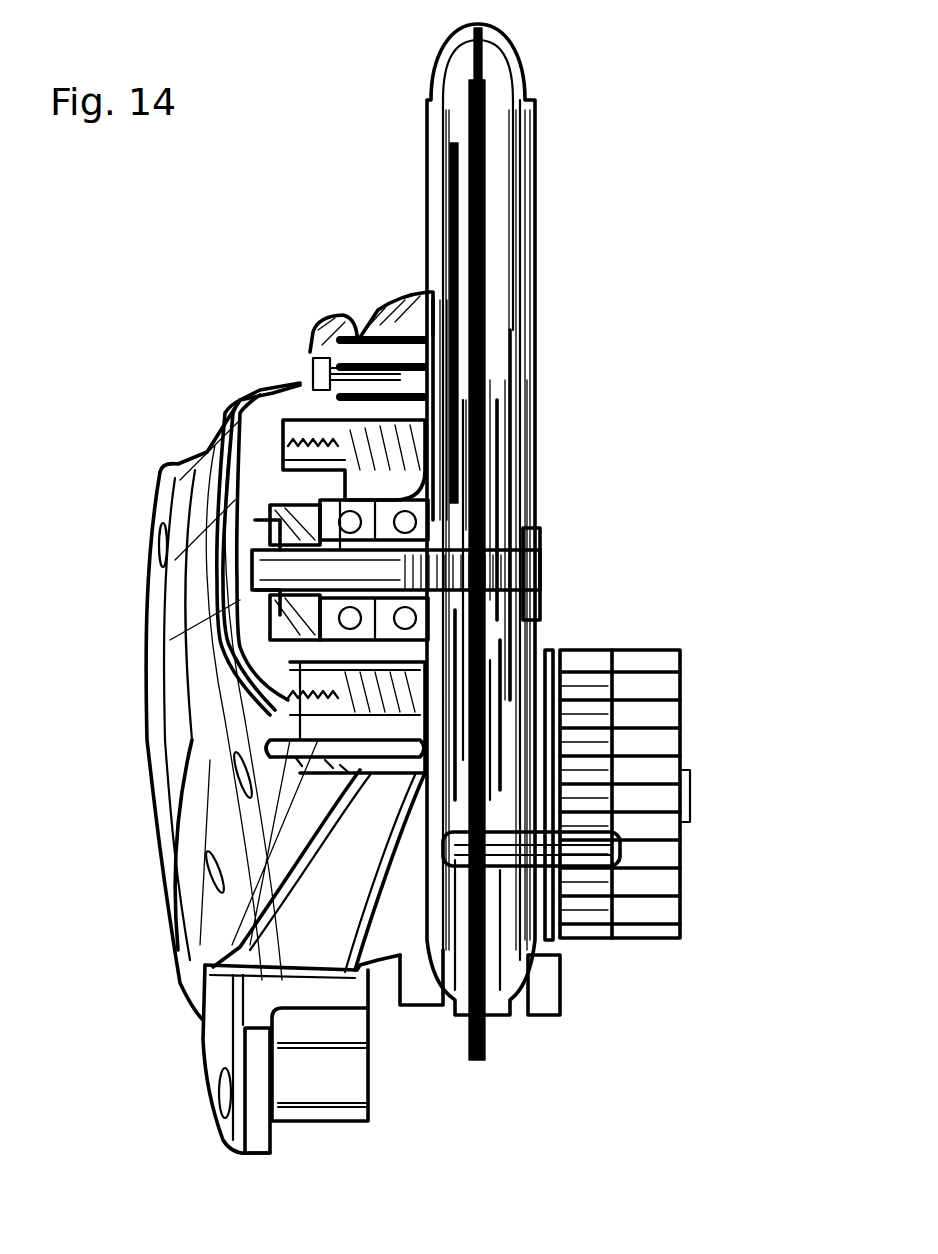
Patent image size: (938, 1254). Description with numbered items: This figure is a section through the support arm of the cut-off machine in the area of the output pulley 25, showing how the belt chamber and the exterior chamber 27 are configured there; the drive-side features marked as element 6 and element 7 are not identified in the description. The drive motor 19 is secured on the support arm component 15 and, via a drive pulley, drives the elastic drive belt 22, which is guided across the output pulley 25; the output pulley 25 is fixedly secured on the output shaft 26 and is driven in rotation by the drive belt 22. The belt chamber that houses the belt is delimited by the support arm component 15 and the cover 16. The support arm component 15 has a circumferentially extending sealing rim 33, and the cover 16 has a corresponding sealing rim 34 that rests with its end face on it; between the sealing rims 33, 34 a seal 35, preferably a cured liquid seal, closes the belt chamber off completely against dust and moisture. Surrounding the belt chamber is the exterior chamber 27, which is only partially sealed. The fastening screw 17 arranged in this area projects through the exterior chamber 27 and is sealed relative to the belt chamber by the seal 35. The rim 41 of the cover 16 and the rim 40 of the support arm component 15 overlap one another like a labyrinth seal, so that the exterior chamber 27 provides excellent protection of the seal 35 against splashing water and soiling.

The outer shell housing 6 is at (525, 232).
The shaft rod 7 is at (488, 160).
The support arm component 15 is at (303, 993).
The cover 16 is at (175, 676).
The fastening screw 17 is at (368, 345).
The drive motor 19 is at (648, 735).
The drive belt 22 is at (232, 406).
The output pulley 25 is at (300, 457).
The output shaft 26 is at (237, 575).
The exterior chamber 27 is at (330, 765).
The sealing rim 33 is at (365, 730).
The sealing rim 34 is at (300, 762).
The seal 35 is at (340, 408).
The rim 40 is at (368, 760).
The rim 41 is at (343, 767).